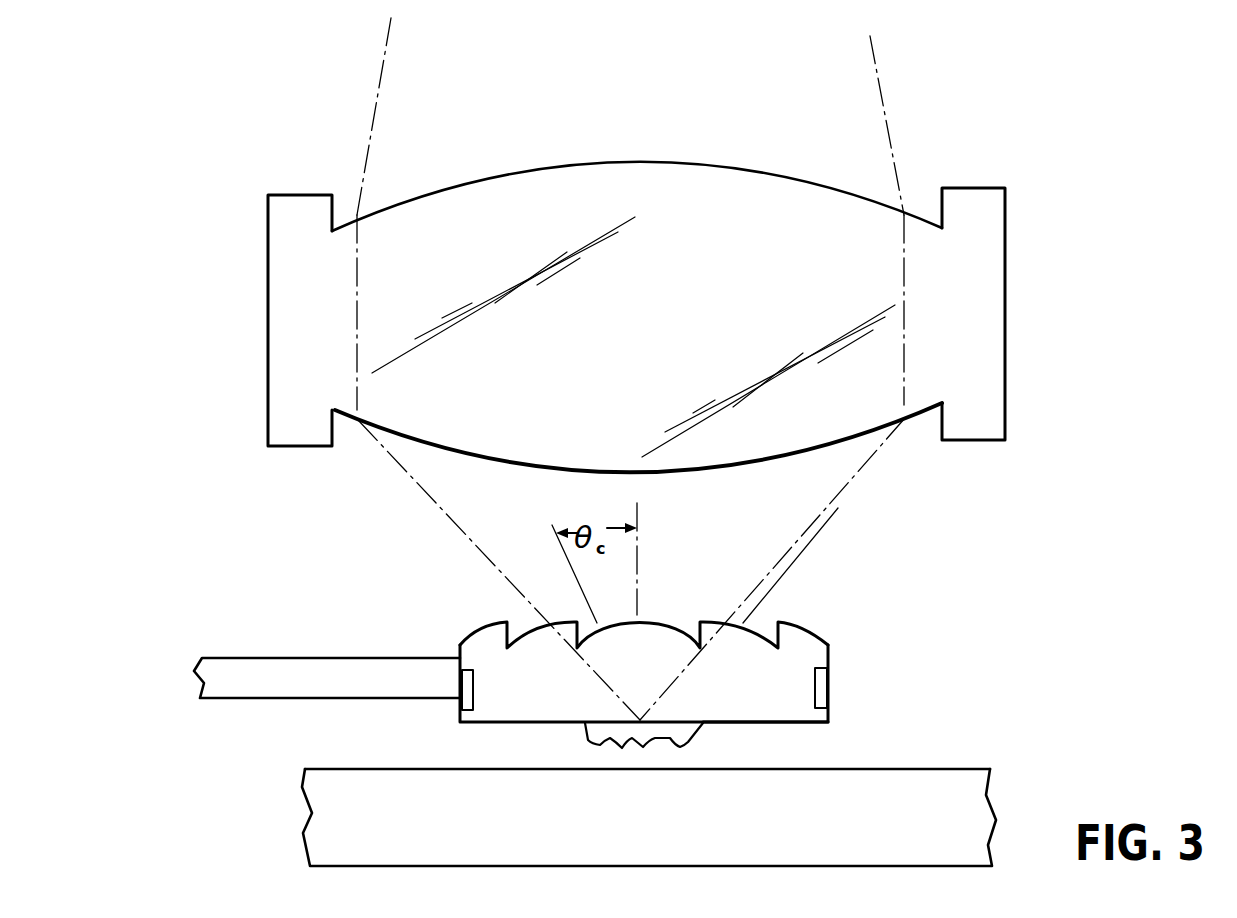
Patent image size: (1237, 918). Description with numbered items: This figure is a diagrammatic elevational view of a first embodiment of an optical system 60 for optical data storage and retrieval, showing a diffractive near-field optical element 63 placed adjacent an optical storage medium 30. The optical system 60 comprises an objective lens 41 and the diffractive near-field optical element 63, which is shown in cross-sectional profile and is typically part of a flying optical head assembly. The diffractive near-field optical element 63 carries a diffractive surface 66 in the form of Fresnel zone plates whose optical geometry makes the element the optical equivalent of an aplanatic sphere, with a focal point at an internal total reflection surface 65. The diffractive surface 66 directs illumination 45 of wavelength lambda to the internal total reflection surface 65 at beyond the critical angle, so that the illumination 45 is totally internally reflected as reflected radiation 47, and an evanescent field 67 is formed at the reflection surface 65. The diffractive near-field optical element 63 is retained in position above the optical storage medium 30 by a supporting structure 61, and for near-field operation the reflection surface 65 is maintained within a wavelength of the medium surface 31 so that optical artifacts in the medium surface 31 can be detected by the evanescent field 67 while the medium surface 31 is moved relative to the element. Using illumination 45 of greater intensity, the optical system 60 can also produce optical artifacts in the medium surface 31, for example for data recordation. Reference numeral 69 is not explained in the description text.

The optical storage medium 30 is at (305, 830).
The medium surface 31 is at (377, 769).
The objective lens 41 is at (1006, 230).
The illumination 45 is at (390, 463).
The reflected radiation 47 is at (838, 508).
The optical system 60 is at (1080, 477).
The supporting structure 61 is at (318, 657).
The diffractive near-field optical element 63 is at (465, 647).
The internal total reflection surface 65 is at (802, 724).
The diffractive surface 66 is at (826, 624).
The evanescent field 67 is at (583, 737).
The connector 69 is at (830, 680).